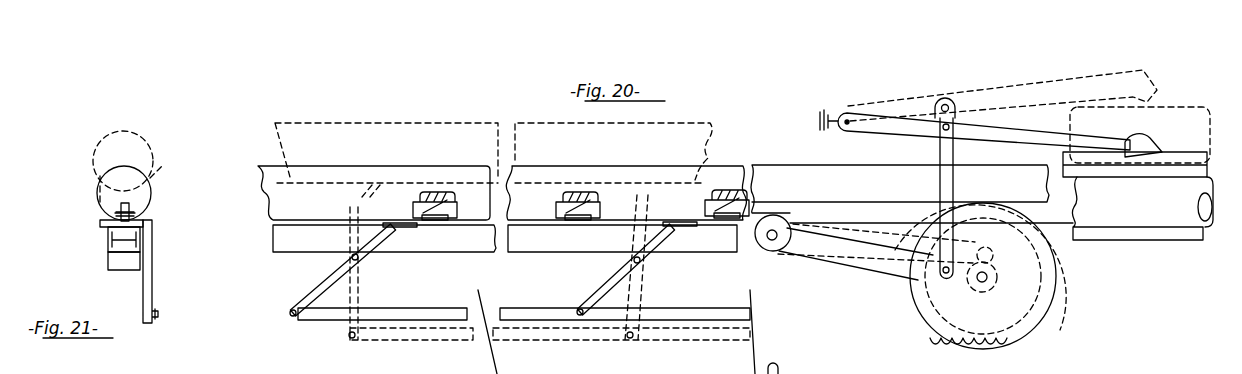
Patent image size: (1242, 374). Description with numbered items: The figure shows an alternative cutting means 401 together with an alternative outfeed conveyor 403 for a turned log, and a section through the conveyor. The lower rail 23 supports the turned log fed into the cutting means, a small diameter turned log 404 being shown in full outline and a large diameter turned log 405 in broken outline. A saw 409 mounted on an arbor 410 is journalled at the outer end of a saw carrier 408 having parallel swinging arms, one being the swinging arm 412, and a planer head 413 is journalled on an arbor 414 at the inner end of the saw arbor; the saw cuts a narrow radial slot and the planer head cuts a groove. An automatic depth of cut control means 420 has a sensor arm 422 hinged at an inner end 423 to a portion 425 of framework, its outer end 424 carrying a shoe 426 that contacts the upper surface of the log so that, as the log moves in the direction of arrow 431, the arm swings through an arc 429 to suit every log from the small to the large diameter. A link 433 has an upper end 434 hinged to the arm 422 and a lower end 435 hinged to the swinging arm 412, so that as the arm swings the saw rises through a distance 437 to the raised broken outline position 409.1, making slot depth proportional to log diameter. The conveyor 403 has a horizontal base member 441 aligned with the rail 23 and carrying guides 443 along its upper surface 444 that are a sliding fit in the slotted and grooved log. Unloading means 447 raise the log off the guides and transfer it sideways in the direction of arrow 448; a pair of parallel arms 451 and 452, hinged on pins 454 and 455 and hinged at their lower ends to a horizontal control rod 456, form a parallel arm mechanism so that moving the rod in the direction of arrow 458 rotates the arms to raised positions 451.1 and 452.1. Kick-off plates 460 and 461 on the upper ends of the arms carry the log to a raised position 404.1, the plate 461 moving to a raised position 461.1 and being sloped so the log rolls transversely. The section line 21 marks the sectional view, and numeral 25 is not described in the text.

In FIG. 20, the section line 21— 21 is at (380, 227).
In FIG. 20, the lower rail 23 is at (587, 262).
In FIG. 20, the wall 25 is at (1198, 156).
In FIG. 20, the alternative cutting means 401 is at (1072, 285).
In FIG. 20, the alternative outfeed conveyor 403 is at (714, 112).
In FIG. 21, the small diameter turned log 404 is at (97, 197).
In FIG. 20, the small diameter turned log 404 is at (433, 157).
In FIG. 21, the raised position of the log 404.1 is at (137, 116).
In FIG. 20, the raised position of the log 404.1 is at (490, 132).
In FIG. 20, the large diameter turned log 405 is at (1165, 107).
In FIG. 20, the saw carrier 408 is at (781, 285).
In FIG. 20, the saw 409 is at (1043, 320).
In FIG. 20, the raised broken outline position of the saw 409.1 is at (1078, 272).
In FIG. 20, the arbor 410 is at (993, 278).
In FIG. 20, the swinging arm 412 is at (857, 260).
In FIG. 20, the planer head 413 is at (770, 255).
In FIG. 20, the arbor 414 is at (758, 246).
In FIG. 20, the automatic depth of cut control means 420 is at (1037, 80).
In FIG. 20, the sensor arm 422 is at (970, 130).
In FIG. 20, the inner end of the sensor arm 423 is at (880, 95).
In FIG. 20, the outer end of the sensor arm 424 is at (1136, 138).
In FIG. 20, the portion of framework 425 is at (822, 120).
In FIG. 20, the shoe 426 is at (1158, 138).
In FIG. 20, the arc 429 is at (1015, 98).
In FIG. 20, the arrow 431 is at (1100, 52).
In FIG. 20, the link 433 is at (940, 160).
In FIG. 20, the upper end of the link 434 is at (940, 103).
In FIG. 20, the lower end of the link 435 is at (922, 262).
In FIG. 20, the distance 437 is at (983, 190).
In FIG. 21, the horizontal base member 441 is at (108, 250).
In FIG. 20, the horizontal base member 441 is at (470, 244).
In FIG. 21, the guides 443 is at (132, 218).
In FIG. 20, the guides 443 is at (428, 222).
In FIG. 21, the upper surface of the base member 444 is at (113, 222).
In FIG. 20, the unloading means 447 is at (472, 345).
In FIG. 21, the arrow 448 is at (72, 136).
In FIG. 20, the arm 451 is at (610, 282).
In FIG. 20, the raised position of arm 451 451.1 is at (640, 302).
In FIG. 20, the arm 452 is at (330, 282).
In FIG. 21, the raised position of arm 452 452.1 is at (165, 170).
In FIG. 20, the raised position of arm 452 452.1 is at (358, 302).
In FIG. 20, the pin 454 is at (633, 260).
In FIG. 21, the pin 455 is at (140, 262).
In FIG. 20, the pin 455 is at (357, 262).
In FIG. 21, the horizontal control rod 456 is at (160, 314).
In FIG. 20, the horizontal control rod 456 is at (540, 310).
In FIG. 20, the arrow 458 is at (700, 355).
In FIG. 20, the kick-off plate 460 is at (676, 226).
In FIG. 21, the kick-off plate 461 is at (108, 232).
In FIG. 20, the kick-off plate 461 is at (392, 230).
In FIG. 21, the raised position of plate 461 461.1 is at (100, 180).